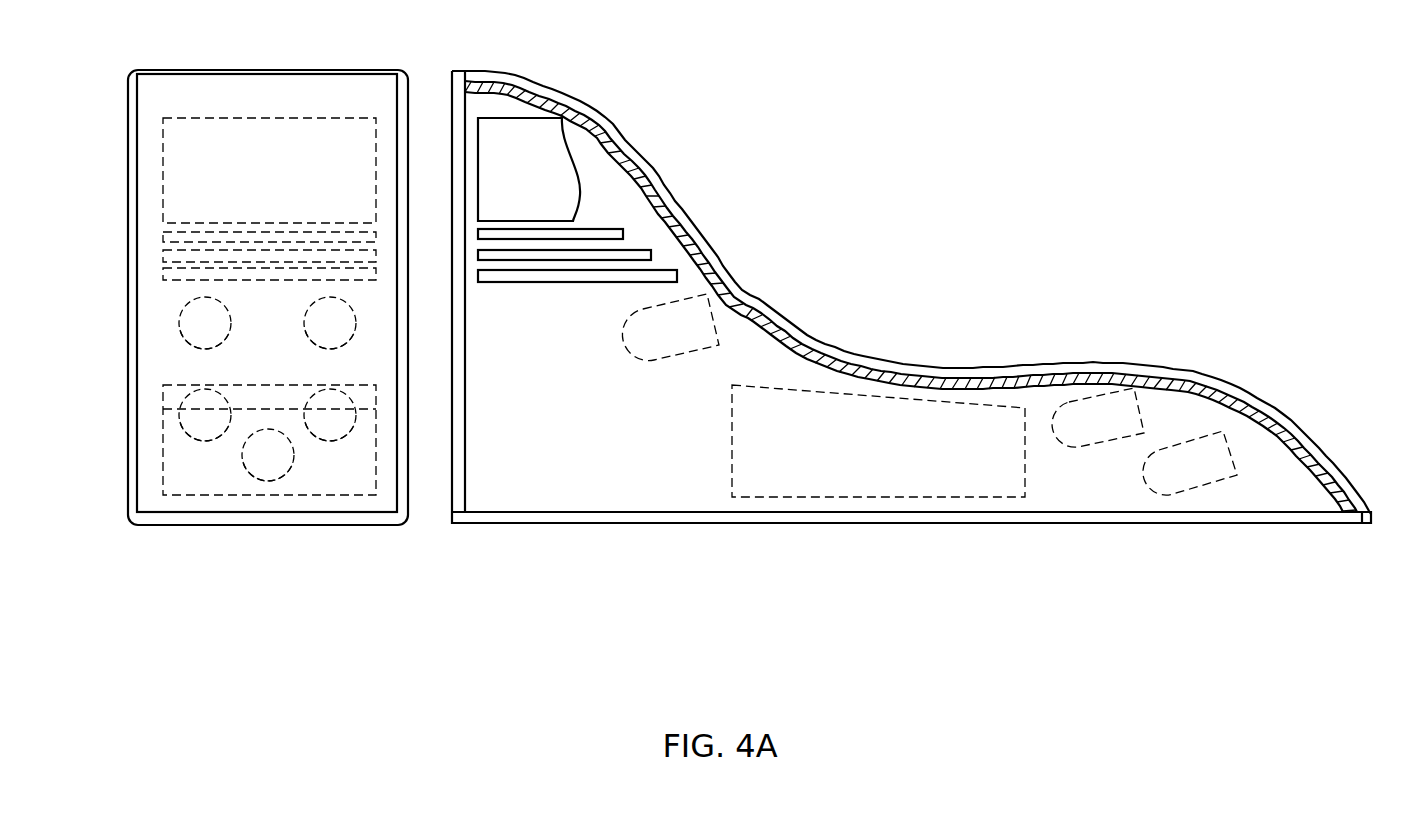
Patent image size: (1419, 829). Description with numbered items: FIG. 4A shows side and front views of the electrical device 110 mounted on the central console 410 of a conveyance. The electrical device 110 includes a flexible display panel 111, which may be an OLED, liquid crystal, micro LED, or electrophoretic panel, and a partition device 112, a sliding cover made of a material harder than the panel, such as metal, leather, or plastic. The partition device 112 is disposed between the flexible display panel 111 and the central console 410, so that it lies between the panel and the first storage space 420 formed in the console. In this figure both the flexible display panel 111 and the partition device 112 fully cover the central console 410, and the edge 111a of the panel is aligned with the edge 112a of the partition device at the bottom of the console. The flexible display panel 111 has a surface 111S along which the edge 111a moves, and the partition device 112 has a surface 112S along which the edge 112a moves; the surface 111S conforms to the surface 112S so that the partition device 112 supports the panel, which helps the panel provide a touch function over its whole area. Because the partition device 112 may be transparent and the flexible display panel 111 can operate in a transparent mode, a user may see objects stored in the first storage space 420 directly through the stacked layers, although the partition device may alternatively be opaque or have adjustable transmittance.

The electrical device 110 is at (764, 337).
The flexible display panel 111 is at (764, 337).
The partition device 112 is at (911, 342).
The surface of the flexible display panel 111S is at (1000, 368).
The surface of the partition device 112S is at (865, 370).
The edge of the flexible display panel 111a is at (1365, 523).
The edge of the partition device 112a is at (1345, 523).
The central console 410 is at (603, 490).
The first storage space 420 is at (163, 441).